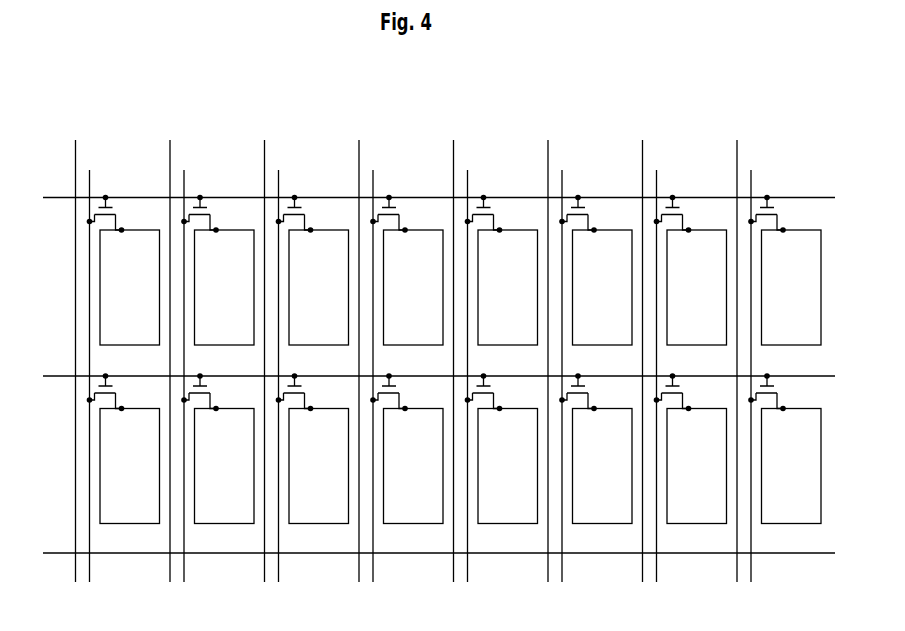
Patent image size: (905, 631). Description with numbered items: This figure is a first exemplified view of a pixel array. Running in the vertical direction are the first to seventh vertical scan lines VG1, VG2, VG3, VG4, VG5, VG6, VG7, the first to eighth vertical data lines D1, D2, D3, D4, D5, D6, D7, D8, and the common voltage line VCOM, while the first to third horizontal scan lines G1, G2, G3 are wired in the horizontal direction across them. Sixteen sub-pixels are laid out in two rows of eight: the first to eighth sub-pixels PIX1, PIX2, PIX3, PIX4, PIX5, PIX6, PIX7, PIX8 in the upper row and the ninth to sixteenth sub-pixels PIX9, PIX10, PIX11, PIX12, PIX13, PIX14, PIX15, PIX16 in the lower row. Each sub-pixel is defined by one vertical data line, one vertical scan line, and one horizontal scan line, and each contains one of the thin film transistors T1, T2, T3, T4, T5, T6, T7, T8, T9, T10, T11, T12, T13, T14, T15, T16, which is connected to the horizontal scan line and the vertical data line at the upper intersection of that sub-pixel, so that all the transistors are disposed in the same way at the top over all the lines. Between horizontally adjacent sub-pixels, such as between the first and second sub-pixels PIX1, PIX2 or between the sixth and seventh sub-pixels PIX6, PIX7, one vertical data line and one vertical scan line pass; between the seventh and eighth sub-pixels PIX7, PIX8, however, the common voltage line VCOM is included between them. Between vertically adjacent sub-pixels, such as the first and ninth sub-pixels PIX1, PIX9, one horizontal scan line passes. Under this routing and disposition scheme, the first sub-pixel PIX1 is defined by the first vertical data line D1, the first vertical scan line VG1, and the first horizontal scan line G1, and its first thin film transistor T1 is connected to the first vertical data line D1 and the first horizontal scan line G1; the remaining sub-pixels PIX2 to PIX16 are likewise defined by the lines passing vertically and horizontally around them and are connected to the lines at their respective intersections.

The first horizontal scan line G1 is at (429, 198).
The second horizontal scan line G2 is at (429, 377).
The third horizontal scan line G3 is at (429, 554).
The first vertical scan line VG1 is at (76, 348).
The second vertical scan line VG2 is at (170, 348).
The third vertical scan line VG3 is at (265, 348).
The fourth vertical scan line VG4 is at (359, 348).
The fifth vertical scan line VG5 is at (454, 348).
The sixth vertical scan line VG6 is at (548, 348).
The seventh vertical scan line VG7 is at (643, 348).
The common voltage line VCOM is at (737, 348).
The first vertical data line D1 is at (90, 364).
The second vertical data line D2 is at (184, 364).
The third vertical data line D3 is at (279, 364).
The fourth vertical data line D4 is at (373, 364).
The fifth vertical data line D5 is at (468, 364).
The sixth vertical data line D6 is at (562, 364).
The seventh vertical data line D7 is at (657, 364).
The eighth vertical data line D8 is at (751, 364).
The first thin film transistor T1 is at (112, 214).
The second thin film transistor T2 is at (206, 214).
The third thin film transistor T3 is at (301, 214).
The fourth thin film transistor T4 is at (395, 214).
The fifth thin film transistor T5 is at (490, 214).
The sixth thin film transistor T6 is at (584, 214).
The seventh thin film transistor T7 is at (679, 214).
The eighth thin film transistor T8 is at (773, 214).
The ninth thin film transistor T9 is at (112, 392).
The tenth thin film transistor T10 is at (211, 392).
The eleventh thin film transistor T11 is at (306, 392).
The twelfth thin film transistor T12 is at (400, 392).
The thirteenth thin film transistor T13 is at (495, 392).
The fourteenth thin film transistor T14 is at (589, 392).
The fifteenth thin film transistor T15 is at (684, 392).
The sixteenth thin film transistor T16 is at (778, 392).
The first sub-pixel PIX1 is at (130, 287).
The second sub-pixel PIX2 is at (225, 287).
The third sub-pixel PIX3 is at (319, 287).
The fourth sub-pixel PIX4 is at (414, 287).
The fifth sub-pixel PIX5 is at (508, 287).
The sixth sub-pixel PIX6 is at (603, 287).
The seventh sub-pixel PIX7 is at (697, 287).
The eighth sub-pixel PIX8 is at (792, 287).
The ninth sub-pixel PIX9 is at (130, 466).
The tenth sub-pixel PIX10 is at (225, 466).
The eleventh sub-pixel PIX11 is at (319, 466).
The twelfth sub-pixel PIX12 is at (414, 466).
The thirteenth sub-pixel PIX13 is at (508, 466).
The fourteenth sub-pixel PIX14 is at (603, 466).
The fifteenth sub-pixel PIX15 is at (697, 466).
The sixteenth sub-pixel PIX16 is at (792, 466).